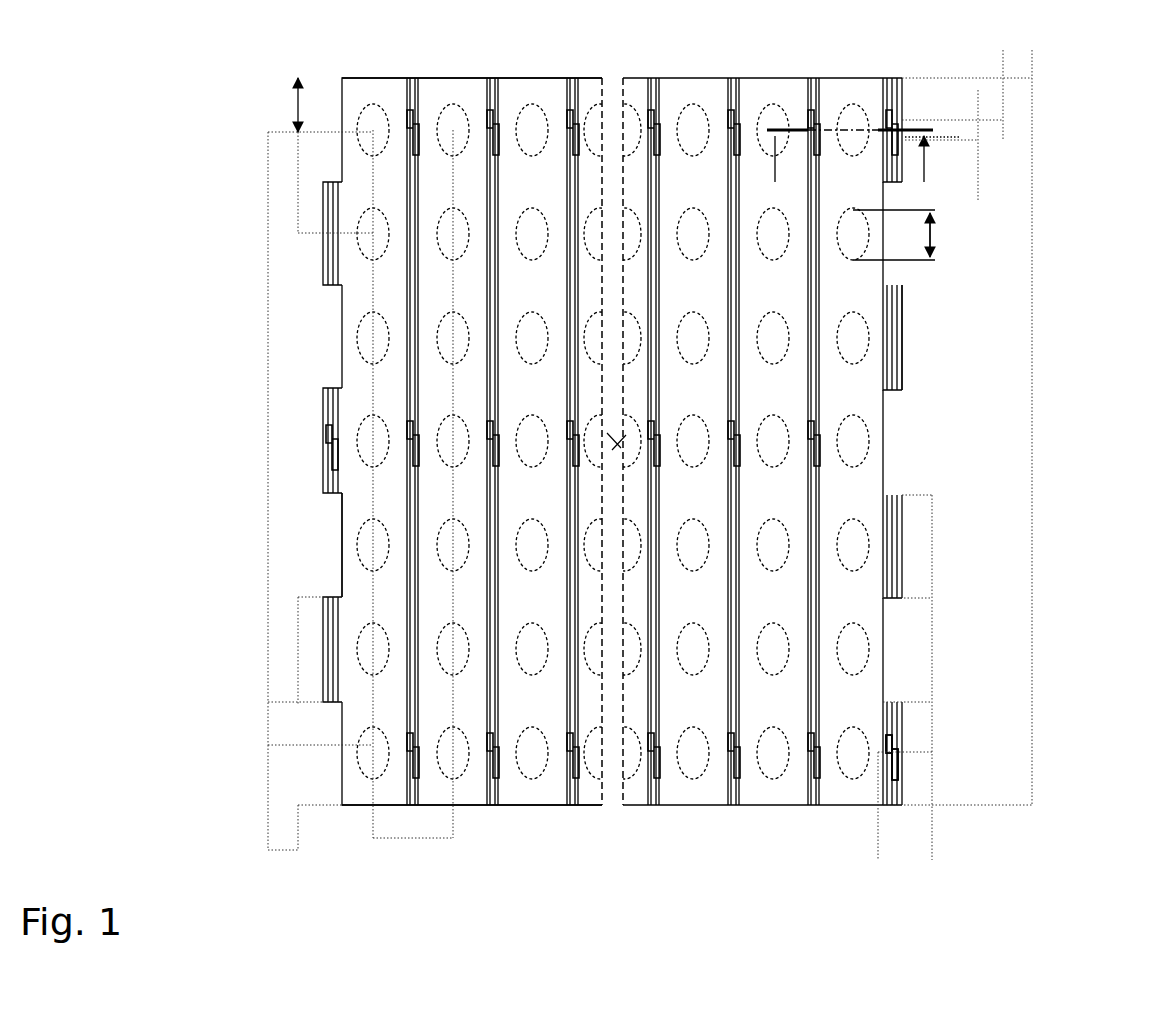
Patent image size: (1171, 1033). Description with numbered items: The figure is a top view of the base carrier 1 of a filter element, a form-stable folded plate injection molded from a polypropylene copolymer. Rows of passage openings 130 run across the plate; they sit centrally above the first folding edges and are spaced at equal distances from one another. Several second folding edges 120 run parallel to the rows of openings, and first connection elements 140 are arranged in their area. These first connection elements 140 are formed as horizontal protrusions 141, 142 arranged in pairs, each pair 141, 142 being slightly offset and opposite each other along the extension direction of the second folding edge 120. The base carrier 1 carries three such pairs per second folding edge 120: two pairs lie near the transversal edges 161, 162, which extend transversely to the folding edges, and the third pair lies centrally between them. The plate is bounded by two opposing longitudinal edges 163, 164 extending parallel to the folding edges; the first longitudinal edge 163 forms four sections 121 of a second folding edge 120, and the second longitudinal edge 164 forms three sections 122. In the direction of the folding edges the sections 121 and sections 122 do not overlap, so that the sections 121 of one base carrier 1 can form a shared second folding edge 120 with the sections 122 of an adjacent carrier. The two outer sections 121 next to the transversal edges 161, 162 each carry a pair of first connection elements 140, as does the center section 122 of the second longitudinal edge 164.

The base carrier 1 is at (990, 362).
The second folding edge 120 is at (728, 805).
The section of second folding edge at first longitudinal edge 121 is at (905, 312).
The section of second folding edge at second longitudinal edge 122 is at (330, 397).
The passage opening 130 is at (850, 440).
The first connection element 140 is at (725, 119).
The first connection element of pair 141 is at (892, 745).
The second connection element of pair 142 is at (900, 764).
The transversal edge 161 is at (528, 77).
The transversal edge 162 is at (528, 810).
The first longitudinal edge 163 is at (912, 376).
The second longitudinal edge 164 is at (325, 555).